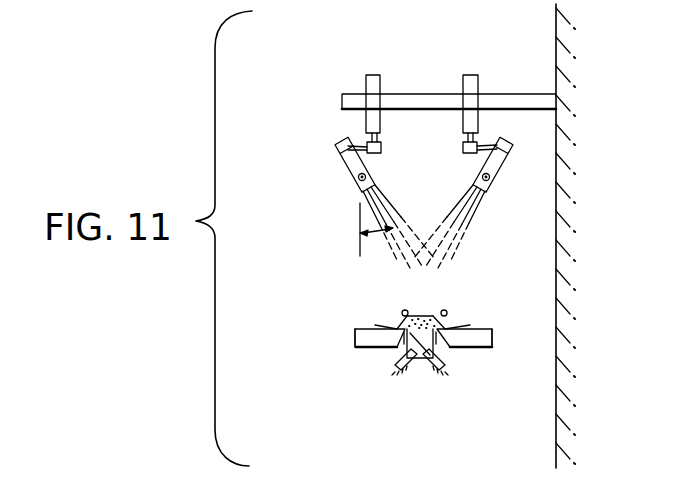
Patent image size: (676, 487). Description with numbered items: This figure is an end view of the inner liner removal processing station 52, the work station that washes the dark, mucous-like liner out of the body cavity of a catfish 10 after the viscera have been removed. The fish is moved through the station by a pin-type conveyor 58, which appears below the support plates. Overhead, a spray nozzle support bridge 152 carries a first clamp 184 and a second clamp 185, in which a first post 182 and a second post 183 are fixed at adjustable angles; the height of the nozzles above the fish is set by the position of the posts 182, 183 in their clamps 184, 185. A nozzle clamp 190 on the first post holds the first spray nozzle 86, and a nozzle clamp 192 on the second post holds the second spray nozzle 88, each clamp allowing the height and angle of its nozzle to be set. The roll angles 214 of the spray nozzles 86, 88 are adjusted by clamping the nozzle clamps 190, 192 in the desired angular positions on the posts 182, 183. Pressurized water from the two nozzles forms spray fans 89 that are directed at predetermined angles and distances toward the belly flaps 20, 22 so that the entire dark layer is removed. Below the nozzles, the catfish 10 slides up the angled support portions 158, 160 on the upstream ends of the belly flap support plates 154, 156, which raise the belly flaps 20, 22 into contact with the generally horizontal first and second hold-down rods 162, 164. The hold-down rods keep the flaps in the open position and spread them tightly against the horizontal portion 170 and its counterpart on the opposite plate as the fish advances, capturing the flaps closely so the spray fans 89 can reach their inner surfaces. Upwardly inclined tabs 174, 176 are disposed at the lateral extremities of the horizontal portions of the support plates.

The catfish 10 is at (478, 324).
The belly flap 20 is at (398, 325).
The belly flap 22 is at (447, 322).
The inner liner removal processing station 52 is at (360, 78).
The pin-type conveyor 58 is at (399, 368).
The first spray nozzle 86 is at (357, 185).
The second spray nozzle 88 is at (487, 191).
The spray fans 89 is at (434, 243).
The spray nozzle support bridge 152 is at (519, 93).
The belly flap support plate 154 is at (376, 350).
The belly flap support plate 156 is at (475, 350).
The angled support portion 158 is at (362, 350).
The angled support portion 160 is at (484, 350).
The first hold-down rod 162 is at (404, 310).
The second hold-down rod 164 is at (445, 310).
The horizontal portion 170 is at (372, 318).
The upwardly inclined tab 174 is at (355, 329).
The upwardly inclined tab 176 is at (492, 329).
The first post 182 is at (362, 140).
The second post 183 is at (492, 146).
The first clamp 184 is at (374, 86).
The second clamp 185 is at (474, 85).
The nozzle clamp 190 is at (338, 145).
The nozzle clamp 192 is at (503, 146).
The roll angle 214 is at (375, 240).